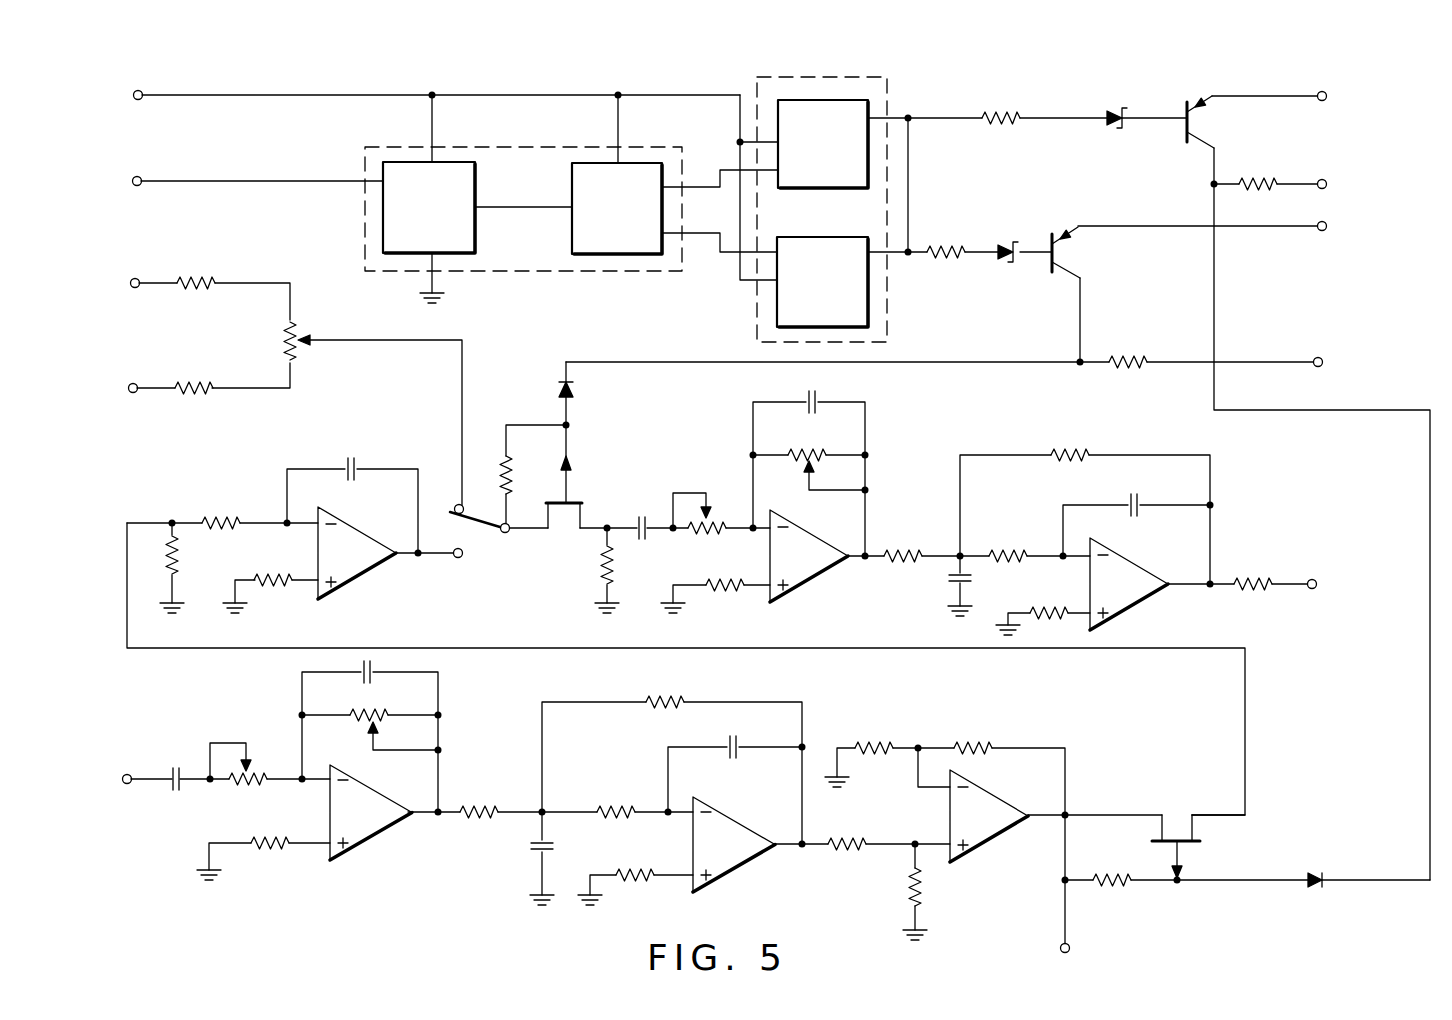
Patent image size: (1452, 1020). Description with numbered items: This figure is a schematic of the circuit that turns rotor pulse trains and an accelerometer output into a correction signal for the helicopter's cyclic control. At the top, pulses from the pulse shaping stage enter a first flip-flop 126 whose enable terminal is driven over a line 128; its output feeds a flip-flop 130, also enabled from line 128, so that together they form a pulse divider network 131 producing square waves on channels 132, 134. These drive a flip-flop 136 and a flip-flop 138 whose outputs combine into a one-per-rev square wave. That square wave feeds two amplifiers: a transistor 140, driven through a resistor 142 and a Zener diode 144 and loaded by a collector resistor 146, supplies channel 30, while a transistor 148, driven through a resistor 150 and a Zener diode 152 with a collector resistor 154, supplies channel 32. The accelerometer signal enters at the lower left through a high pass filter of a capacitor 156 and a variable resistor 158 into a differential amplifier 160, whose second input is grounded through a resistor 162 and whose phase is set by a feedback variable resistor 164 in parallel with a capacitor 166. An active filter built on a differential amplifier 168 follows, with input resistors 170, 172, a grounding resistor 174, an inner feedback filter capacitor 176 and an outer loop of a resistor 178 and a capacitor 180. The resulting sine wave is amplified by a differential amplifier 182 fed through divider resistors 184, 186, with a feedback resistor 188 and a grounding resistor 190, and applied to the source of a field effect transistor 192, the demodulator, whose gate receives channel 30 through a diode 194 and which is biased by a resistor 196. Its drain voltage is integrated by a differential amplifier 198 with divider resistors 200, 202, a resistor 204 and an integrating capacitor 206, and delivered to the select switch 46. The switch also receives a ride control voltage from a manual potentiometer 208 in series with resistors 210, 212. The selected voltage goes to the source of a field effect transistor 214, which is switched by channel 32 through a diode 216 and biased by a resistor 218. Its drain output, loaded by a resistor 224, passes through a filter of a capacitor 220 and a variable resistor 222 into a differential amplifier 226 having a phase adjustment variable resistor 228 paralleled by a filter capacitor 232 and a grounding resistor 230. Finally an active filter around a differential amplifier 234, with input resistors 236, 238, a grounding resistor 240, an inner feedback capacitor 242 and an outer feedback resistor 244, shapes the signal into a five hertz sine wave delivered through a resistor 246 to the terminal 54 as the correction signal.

The channel 30 is at (1213, 330).
The channel 32 is at (973, 365).
The select switch 46 is at (478, 527).
The terminal 54 is at (1315, 578).
The first flip-flop 126 is at (463, 233).
The line 128 is at (253, 94).
The flip-flop 130 is at (593, 243).
The pulse divider network 131 is at (617, 272).
The channel 132 is at (693, 185).
The channel 134 is at (727, 253).
The flip-flop 136 is at (857, 113).
The flip-flop 138 is at (853, 293).
The transistor 140 is at (1197, 132).
The resistor 142 is at (1005, 113).
The Zener diode 144 is at (1113, 113).
The resistor 146 is at (1263, 178).
The transistor 148 is at (1060, 263).
The resistor 150 is at (947, 243).
The Zener diode 152 is at (1005, 243).
The resistor 154 is at (1127, 357).
The capacitor 156 is at (178, 768).
The variable resistor 158 is at (260, 790).
The differential amplifier 160 is at (357, 795).
The resistor 162 is at (280, 848).
The variable resistor 164 is at (367, 717).
The capacitor 166 is at (373, 665).
The differential amplifier 168 is at (727, 832).
The resistor 170 is at (473, 803).
The resistor 172 is at (605, 808).
The resistor 174 is at (628, 867).
The filter capacitor 176 is at (737, 740).
The resistor 178 is at (678, 700).
The capacitor 180 is at (530, 848).
The differential amplifier 182 is at (980, 808).
The resistor 184 is at (852, 838).
The resistor 186 is at (923, 893).
The feedback resistor 188 is at (978, 738).
The resistor 190 is at (875, 742).
The field effect transistor 192 is at (1178, 830).
The diode 194 is at (1317, 873).
The resistor 196 is at (1105, 888).
The differential amplifier 198 is at (348, 540).
The resistor 200 is at (225, 517).
The resistor 202 is at (181, 557).
The resistor 204 is at (277, 583).
The integrating capacitor 206 is at (352, 458).
The potentiometer 208 is at (293, 327).
The resistor 210 is at (198, 277).
The resistor 212 is at (198, 383).
The field effect transistor 214 is at (565, 518).
The diode 216 is at (577, 390).
The resistor 218 is at (512, 480).
The capacitor 220 is at (640, 517).
The variable resistor 222 is at (705, 537).
The resistor 224 is at (615, 567).
The differential amplifier 226 is at (803, 542).
The phase adjustment variable resistor 228 is at (805, 450).
The resistor 230 is at (717, 593).
The filter capacitor 232 is at (818, 392).
The differential amplifier 234 is at (1113, 570).
The resistor 236 is at (908, 548).
The resistor 238 is at (1012, 550).
The resistor 240 is at (1040, 614).
The capacitor 242 is at (1140, 500).
The resistor 244 is at (1072, 452).
The resistor 246 is at (1255, 572).